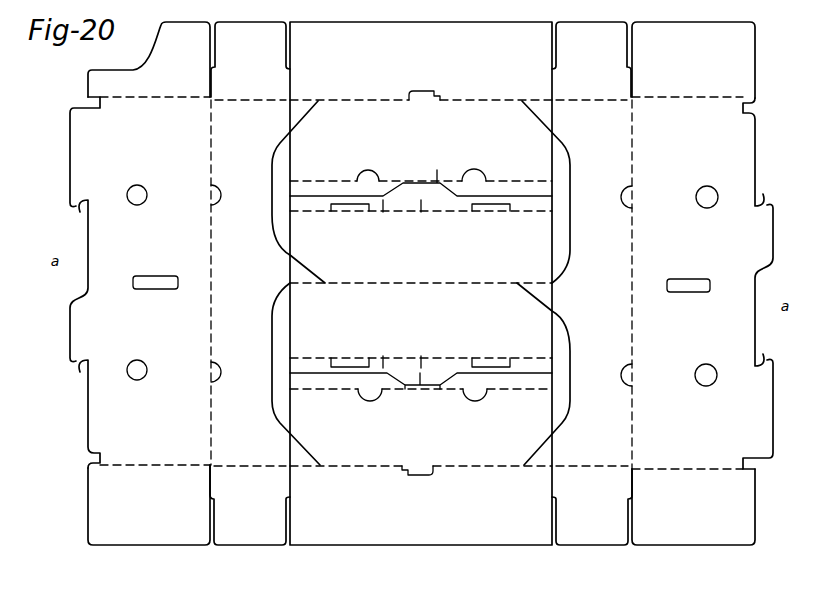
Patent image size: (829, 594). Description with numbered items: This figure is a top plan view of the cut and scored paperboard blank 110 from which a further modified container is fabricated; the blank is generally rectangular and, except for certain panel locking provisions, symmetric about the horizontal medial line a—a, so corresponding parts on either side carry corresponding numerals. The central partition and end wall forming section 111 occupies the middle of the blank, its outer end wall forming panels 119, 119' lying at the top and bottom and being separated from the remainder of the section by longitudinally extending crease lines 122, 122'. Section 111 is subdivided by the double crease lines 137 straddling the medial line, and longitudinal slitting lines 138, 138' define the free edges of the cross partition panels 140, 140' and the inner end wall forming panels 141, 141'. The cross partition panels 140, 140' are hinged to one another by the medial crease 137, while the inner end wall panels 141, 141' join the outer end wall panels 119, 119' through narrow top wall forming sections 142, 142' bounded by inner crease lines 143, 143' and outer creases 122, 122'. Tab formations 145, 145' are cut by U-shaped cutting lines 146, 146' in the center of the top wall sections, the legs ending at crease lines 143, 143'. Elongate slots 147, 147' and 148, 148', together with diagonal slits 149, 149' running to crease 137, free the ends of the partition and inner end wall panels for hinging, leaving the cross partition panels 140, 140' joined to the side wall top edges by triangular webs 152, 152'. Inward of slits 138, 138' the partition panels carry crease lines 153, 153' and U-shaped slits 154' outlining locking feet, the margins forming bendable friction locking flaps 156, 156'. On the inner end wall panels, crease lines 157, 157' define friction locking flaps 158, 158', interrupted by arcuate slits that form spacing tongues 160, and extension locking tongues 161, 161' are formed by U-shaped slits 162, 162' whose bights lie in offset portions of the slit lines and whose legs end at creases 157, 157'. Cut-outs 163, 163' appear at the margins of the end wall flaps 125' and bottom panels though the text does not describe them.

The cut and scored blank 110 is at (112, 548).
The central partition and end wall forming section 111 is at (380, 546).
The outer end wall forming panels 119 is at (421, 283).
The outer end wall forming panels 119' is at (397, 50).
The crease lines 122 is at (421, 479).
The crease lines 122' is at (421, 95).
The end wall forming flaps 125' is at (693, 60).
The double crease lines 137 is at (448, 285).
The slitting lines 138 is at (382, 359).
The slitting lines 138' is at (399, 218).
The cross partition panel 140 is at (421, 340).
The cross partition panel 140' is at (421, 226).
The inner end wall forming panel 141 is at (432, 437).
The inner end wall forming panel 141' is at (437, 135).
The top wall forming section 142 is at (361, 451).
The top wall forming section 142' is at (360, 119).
The crease lines 143 is at (391, 453).
The crease lines 143' is at (382, 128).
The tab formation 145 is at (397, 482).
The tab formation 145' is at (412, 86).
The U-shaped cutting line 146 is at (430, 489).
The U-shaped cutting line 146' is at (458, 83).
The elongate slot 147 is at (274, 374).
The elongate slot 147' is at (567, 192).
The elongate slot 148 is at (561, 374).
The elongate slot 148' is at (282, 192).
The diagonal slit 149 is at (524, 314).
The diagonal slit 149' is at (316, 249).
The triangular web formation 152 is at (507, 298).
The triangular web formation 152' is at (325, 272).
The cut score or crease line 153 is at (447, 347).
The cut score or crease line 153' is at (482, 220).
The U-shaped slits 154' is at (333, 218).
The bendable friction locking flap 156 is at (412, 351).
The bendable friction locking flap 156' is at (435, 218).
The cut score or crease line 157 is at (527, 410).
The cut score or crease line 157' is at (385, 165).
The bendable friction locking flap 158 is at (533, 400).
The bendable friction locking flap 158' is at (528, 176).
The end wall panel spacing tongues 160 is at (422, 402).
The extension locking tongue 161 is at (432, 372).
The extension locking tongue 161' is at (445, 172).
The U-shaped slit 162 is at (418, 396).
The U-shaped slit 162' is at (415, 173).
The notch 163 is at (786, 465).
The notch 163' is at (59, 118).